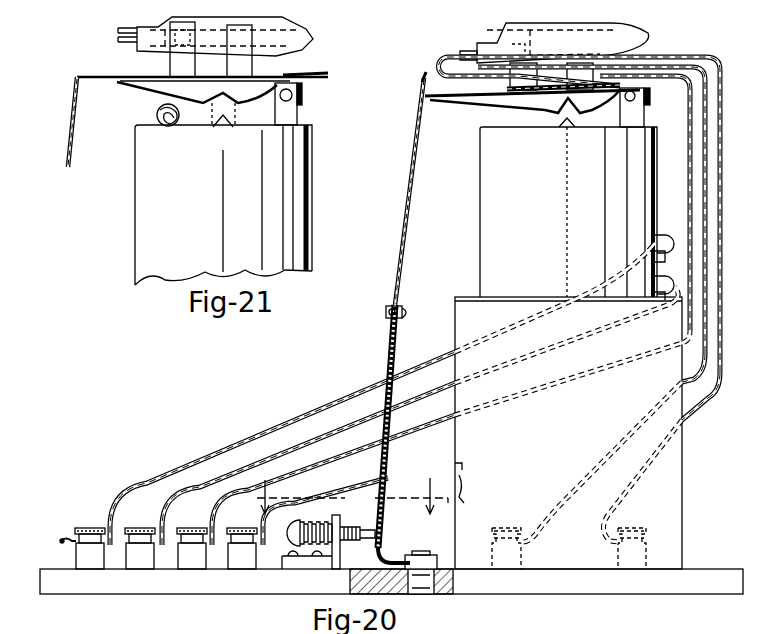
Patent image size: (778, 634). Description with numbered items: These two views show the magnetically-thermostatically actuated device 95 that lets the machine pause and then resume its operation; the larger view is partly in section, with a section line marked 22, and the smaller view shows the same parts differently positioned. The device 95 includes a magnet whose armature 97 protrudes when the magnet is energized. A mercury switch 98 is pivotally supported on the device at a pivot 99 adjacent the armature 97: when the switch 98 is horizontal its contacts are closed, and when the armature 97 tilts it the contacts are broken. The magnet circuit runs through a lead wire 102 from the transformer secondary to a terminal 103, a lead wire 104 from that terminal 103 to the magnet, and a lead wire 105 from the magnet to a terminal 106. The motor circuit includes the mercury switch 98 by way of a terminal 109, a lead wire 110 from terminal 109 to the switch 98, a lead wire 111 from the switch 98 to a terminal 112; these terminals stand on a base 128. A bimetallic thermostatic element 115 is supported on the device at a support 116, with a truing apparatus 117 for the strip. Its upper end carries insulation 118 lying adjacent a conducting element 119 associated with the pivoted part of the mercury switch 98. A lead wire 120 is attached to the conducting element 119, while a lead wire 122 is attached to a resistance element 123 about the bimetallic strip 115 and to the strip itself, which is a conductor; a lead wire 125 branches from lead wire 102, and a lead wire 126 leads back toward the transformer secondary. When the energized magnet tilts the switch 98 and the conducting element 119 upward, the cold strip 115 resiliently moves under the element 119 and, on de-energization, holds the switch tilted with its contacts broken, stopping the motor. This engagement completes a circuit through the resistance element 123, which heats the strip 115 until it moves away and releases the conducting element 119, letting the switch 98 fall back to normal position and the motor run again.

In FIG. 20, the section line 22- 22 is at (360, 487).
In FIG. 21, the magnetically-thermostatically actuated device 95 is at (140, 228).
In FIG. 20, the magnetically-thermostatically actuated device 95 is at (682, 478).
In FIG. 21, the armature 97 is at (222, 128).
In FIG. 20, the armature 97 is at (563, 127).
In FIG. 21, the mercury switch 98 is at (305, 45).
In FIG. 20, the mercury switch 98 is at (648, 36).
In FIG. 21, the pivot 99 is at (292, 96).
In FIG. 20, the pivot 99 is at (640, 115).
In FIG. 20, the lead wire 102 is at (58, 540).
In FIG. 20, the terminal 103 is at (85, 518).
In FIG. 20, the lead wire 104 is at (210, 455).
In FIG. 20, the lead wire 105 is at (266, 465).
In FIG. 20, the terminal 106 is at (145, 528).
In FIG. 20, the terminal 109 is at (512, 527).
In FIG. 20, the lead wire 110 is at (707, 307).
In FIG. 20, the lead wire 111 is at (722, 366).
In FIG. 20, the terminal 112 is at (638, 528).
In FIG. 21, the bimetallic thermostatic element 115 is at (70, 121).
In FIG. 20, the bimetallic thermostatic element 115 is at (408, 222).
In FIG. 20, the support 116 is at (448, 540).
In FIG. 20, the truing apparatus 117 is at (325, 560).
In FIG. 21, the insulation 118 is at (82, 118).
In FIG. 20, the insulation 118 is at (423, 142).
In FIG. 21, the conducting element 119 is at (88, 77).
In FIG. 20, the conducting element 119 is at (440, 98).
In FIG. 20, the lead wire 120 is at (693, 146).
In FIG. 20, the lead wire 122 is at (333, 497).
In FIG. 20, the resistance element 123 is at (385, 340).
In FIG. 20, the lead wire 125 is at (220, 553).
In FIG. 20, the lead wire 126 is at (170, 553).
In FIG. 20, the base plate 128 is at (391, 601).